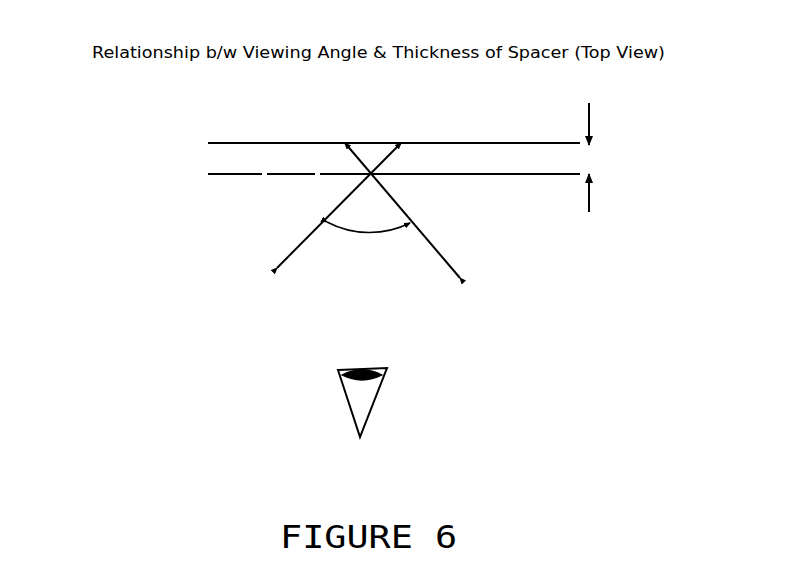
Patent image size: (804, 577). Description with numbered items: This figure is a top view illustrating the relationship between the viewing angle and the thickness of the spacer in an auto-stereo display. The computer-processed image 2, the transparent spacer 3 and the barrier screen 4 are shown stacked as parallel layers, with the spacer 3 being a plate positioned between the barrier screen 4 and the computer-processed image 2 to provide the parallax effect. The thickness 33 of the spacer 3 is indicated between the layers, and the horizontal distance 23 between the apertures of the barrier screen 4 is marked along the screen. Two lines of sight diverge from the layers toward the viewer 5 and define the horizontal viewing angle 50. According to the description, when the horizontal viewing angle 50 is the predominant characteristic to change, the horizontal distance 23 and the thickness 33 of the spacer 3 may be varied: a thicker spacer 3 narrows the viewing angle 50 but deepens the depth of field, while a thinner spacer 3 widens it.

The computer-processed image 2 is at (205, 140).
The spacer 3 is at (208, 158).
The barrier screen 4 is at (207, 173).
The viewer 5 is at (333, 406).
The horizontal distance between the apertures 23 is at (395, 137).
The thickness of the spacer 33 is at (601, 157).
The horizontal viewing angle 50 is at (368, 221).